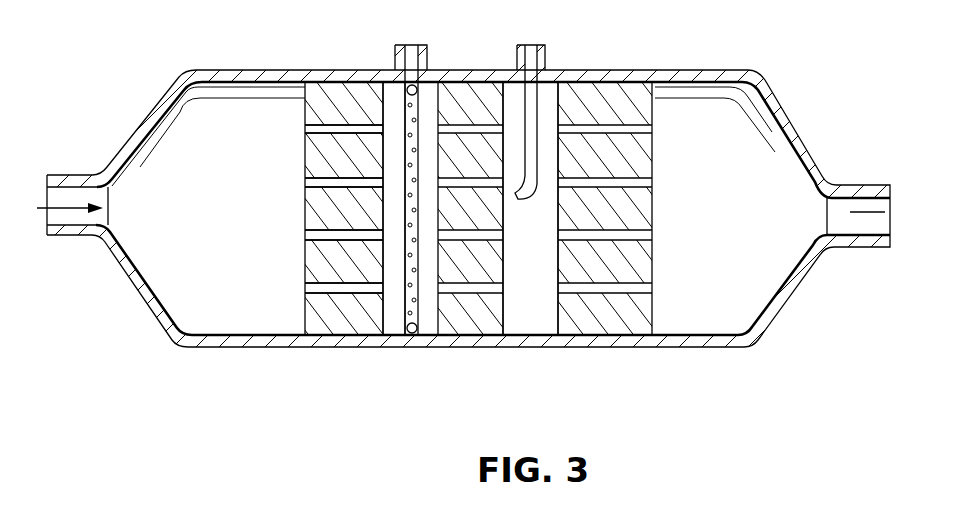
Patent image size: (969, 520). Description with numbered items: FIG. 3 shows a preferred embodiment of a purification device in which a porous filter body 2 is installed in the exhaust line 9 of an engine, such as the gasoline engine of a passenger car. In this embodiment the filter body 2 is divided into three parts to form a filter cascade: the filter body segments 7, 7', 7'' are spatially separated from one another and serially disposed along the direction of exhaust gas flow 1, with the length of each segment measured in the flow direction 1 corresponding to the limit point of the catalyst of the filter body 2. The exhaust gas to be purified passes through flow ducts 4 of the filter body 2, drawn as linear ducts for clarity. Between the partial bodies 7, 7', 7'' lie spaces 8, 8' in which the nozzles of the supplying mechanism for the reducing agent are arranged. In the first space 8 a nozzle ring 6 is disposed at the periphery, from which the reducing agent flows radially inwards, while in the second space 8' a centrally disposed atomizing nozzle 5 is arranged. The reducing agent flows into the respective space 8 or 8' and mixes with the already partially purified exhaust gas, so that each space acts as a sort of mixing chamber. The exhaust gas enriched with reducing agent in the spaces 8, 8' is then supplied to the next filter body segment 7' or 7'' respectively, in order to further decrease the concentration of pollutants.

The direction of exhaust gas flow 1 is at (67, 211).
The porous filter body 2 is at (485, 206).
The flow ducts 4 is at (305, 181).
The atomizing nozzle 5 is at (540, 100).
The nozzle ring 6 is at (418, 102).
The filter body segment 7 is at (343, 183).
The filter body segment 7' is at (470, 171).
The filter body segment 7'' is at (605, 176).
The space 8 is at (381, 183).
The space 8' is at (526, 175).
The exhaust line 9 is at (245, 342).